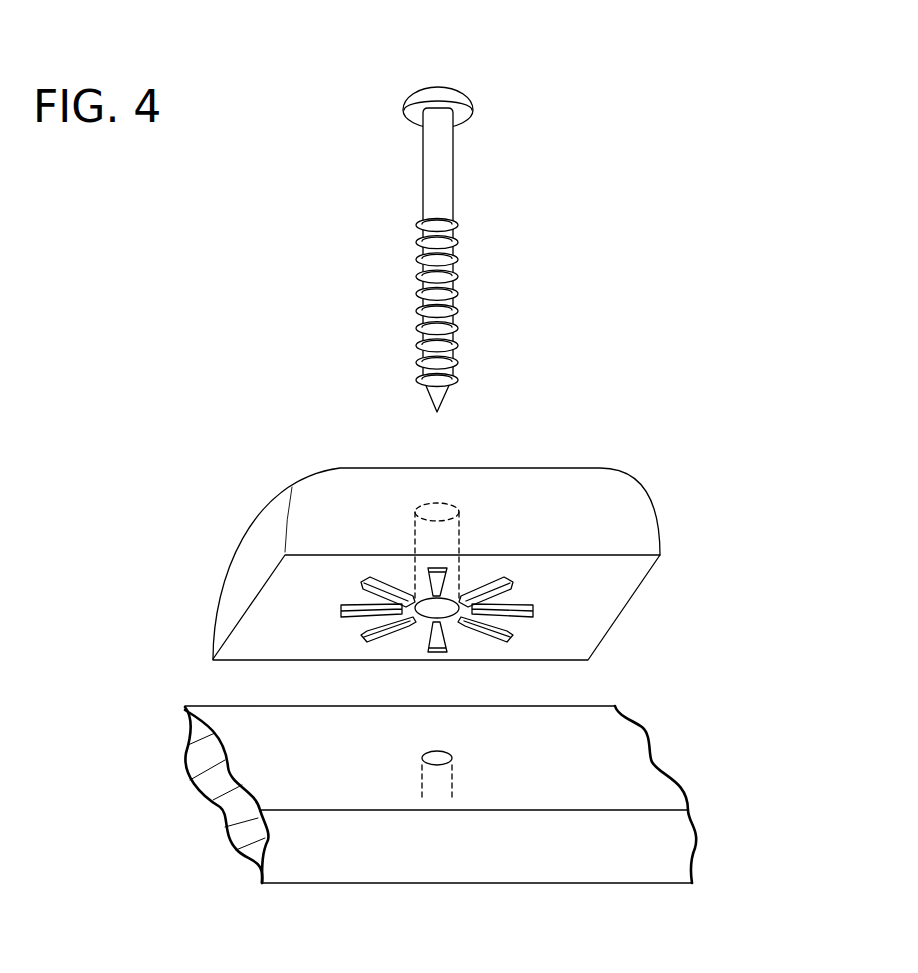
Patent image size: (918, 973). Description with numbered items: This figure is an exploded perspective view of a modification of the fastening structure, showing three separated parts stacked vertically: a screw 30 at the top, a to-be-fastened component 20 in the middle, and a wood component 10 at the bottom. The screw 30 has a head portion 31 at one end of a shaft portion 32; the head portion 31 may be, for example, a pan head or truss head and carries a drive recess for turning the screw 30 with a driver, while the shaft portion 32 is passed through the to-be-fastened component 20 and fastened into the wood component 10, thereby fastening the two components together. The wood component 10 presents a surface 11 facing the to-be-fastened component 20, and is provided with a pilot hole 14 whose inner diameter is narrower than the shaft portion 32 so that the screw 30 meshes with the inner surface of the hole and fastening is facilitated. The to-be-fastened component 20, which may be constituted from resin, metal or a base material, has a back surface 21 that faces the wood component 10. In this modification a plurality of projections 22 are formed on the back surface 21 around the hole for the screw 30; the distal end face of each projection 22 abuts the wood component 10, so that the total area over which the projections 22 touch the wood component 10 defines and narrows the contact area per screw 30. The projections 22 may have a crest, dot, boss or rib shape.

The wood component 10 is at (498, 830).
The surface of the wood component 11 is at (595, 760).
The pilot hole 14 is at (434, 764).
The to-be-fastened component 20 is at (431, 564).
The back surface 21 is at (596, 582).
The projections 22 is at (522, 618).
The screw 30 is at (360, 235).
The head portion 31 is at (414, 92).
The shaft portion 32 is at (378, 260).